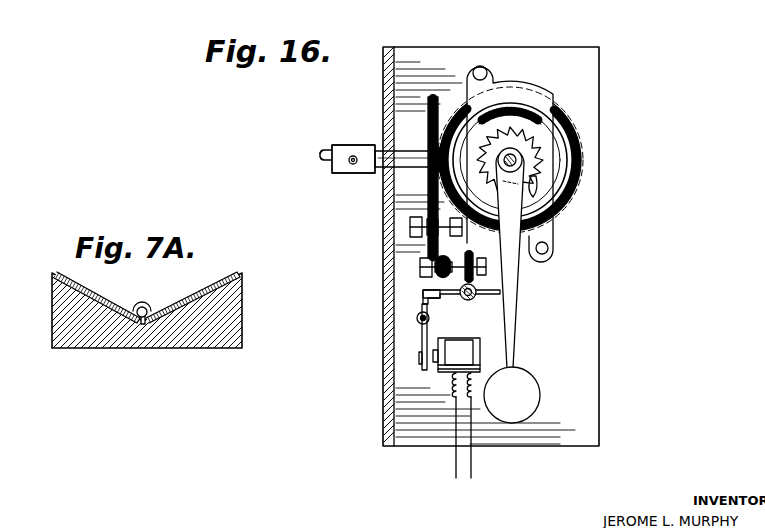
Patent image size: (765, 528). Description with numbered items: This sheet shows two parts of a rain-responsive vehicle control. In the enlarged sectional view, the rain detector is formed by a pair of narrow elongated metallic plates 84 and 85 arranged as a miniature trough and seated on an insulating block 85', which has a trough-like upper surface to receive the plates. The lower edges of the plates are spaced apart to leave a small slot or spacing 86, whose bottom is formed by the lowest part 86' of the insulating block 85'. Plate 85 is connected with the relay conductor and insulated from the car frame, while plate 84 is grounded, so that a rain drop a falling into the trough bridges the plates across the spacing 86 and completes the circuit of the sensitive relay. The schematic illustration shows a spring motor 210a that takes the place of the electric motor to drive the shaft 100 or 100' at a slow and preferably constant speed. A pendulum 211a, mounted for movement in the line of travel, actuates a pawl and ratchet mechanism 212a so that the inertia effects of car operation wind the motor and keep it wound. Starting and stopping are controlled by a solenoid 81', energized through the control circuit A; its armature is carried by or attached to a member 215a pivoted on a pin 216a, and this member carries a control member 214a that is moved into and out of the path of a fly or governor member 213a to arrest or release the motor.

In FIG. 16, the spring motor 210a is at (611, 111).
In FIG. 16, the pawl and ratchet mechanism 212a is at (535, 188).
In FIG. 16, the pendulum 211a is at (528, 290).
In FIG. 16, the fly or governor member 213a is at (456, 296).
In FIG. 16, the control member 214a is at (424, 292).
In FIG. 16, the pin 216a is at (417, 319).
In FIG. 16, the member carrying the stop member 215a is at (425, 340).
In FIG. 16, the solenoid 81' is at (496, 354).
In FIG. 16, the shaft 100 is at (372, 176).
In FIG. 16, the shaft 100' is at (343, 184).
In FIG. 16, the control circuit A is at (461, 437).
In FIG. 7A, the narrow elongated plate 85 is at (97, 297).
In FIG. 7A, the narrow elongated plate 84 is at (198, 291).
In FIG. 7A, the spacing 86 is at (153, 295).
In FIG. 7A, the lowest part of the insulating block 86' is at (154, 351).
In FIG. 7A, the insulating block 85' is at (160, 328).
In FIG. 7A, the rain drop a is at (133, 311).